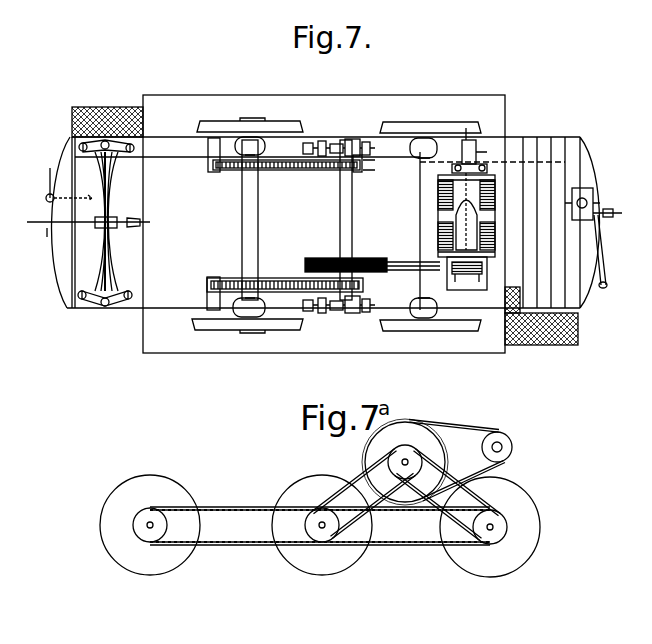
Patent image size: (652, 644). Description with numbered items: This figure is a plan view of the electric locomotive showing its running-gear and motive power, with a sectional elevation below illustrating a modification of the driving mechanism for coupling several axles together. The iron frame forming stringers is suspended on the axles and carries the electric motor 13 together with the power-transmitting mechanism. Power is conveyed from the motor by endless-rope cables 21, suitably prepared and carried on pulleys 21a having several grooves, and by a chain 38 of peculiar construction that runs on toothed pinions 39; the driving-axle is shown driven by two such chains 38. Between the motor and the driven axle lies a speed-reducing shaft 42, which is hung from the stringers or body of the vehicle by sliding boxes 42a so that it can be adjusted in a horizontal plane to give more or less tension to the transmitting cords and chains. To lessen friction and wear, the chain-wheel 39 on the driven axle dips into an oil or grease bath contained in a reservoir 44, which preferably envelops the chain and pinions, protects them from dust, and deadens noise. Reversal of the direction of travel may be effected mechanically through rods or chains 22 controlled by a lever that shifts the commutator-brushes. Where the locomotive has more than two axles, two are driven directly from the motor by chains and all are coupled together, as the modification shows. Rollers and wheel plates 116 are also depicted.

The electric motor 13 is at (452, 211).
The endless-rope cables 21 is at (402, 262).
The pulleys 21a is at (312, 258).
The rods or chains 22 is at (176, 160).
The chain 38 is at (300, 170).
The toothed pinions 39 is at (214, 172).
The speed-reducing shaft 42 is at (341, 198).
The sliding boxes 42a is at (350, 139).
The reservoir 44 is at (266, 278).
The wheel plate 116 is at (295, 125).